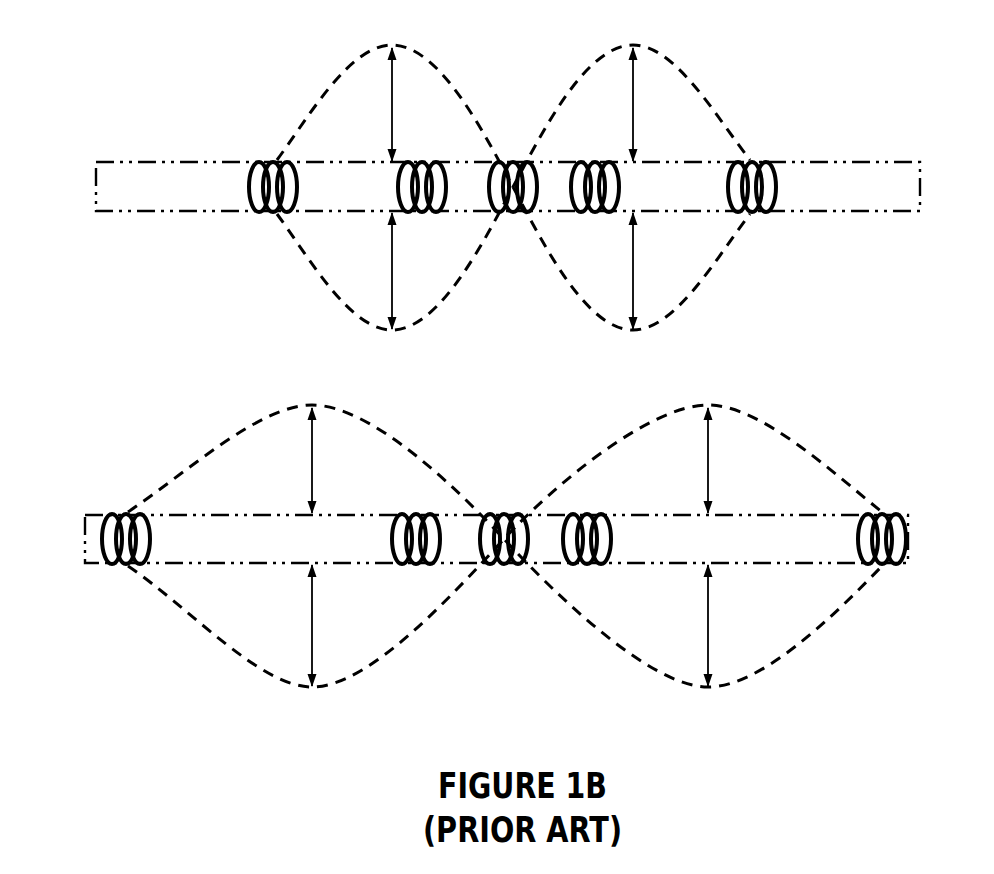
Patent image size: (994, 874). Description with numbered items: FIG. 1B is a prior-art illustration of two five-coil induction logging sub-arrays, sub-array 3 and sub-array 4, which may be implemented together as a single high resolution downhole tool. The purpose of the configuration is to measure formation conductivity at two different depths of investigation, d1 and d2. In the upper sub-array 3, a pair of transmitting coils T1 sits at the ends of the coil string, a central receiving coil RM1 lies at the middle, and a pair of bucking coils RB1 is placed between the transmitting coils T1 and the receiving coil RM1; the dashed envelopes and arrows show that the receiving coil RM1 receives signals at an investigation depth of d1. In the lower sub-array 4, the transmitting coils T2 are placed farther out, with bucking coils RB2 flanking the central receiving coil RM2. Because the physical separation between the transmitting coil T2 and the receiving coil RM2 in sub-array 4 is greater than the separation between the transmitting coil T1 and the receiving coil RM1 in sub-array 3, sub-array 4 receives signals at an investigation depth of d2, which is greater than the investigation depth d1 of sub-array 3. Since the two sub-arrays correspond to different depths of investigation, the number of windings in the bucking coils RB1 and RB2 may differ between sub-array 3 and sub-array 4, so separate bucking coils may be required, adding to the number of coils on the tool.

The sub-array 3 is at (92, 146).
The sub-array 4 is at (83, 496).
The transmitting coil T1 is at (511, 159).
The bucking coil RB1 is at (511, 166).
The receiving coil RM1 is at (513, 159).
The investigation depth d1 is at (520, 192).
The transmitting coil T2 is at (504, 520).
The bucking coil RB2 is at (507, 521).
The receiving coil RM2 is at (506, 519).
The investigation depth d2 is at (512, 551).